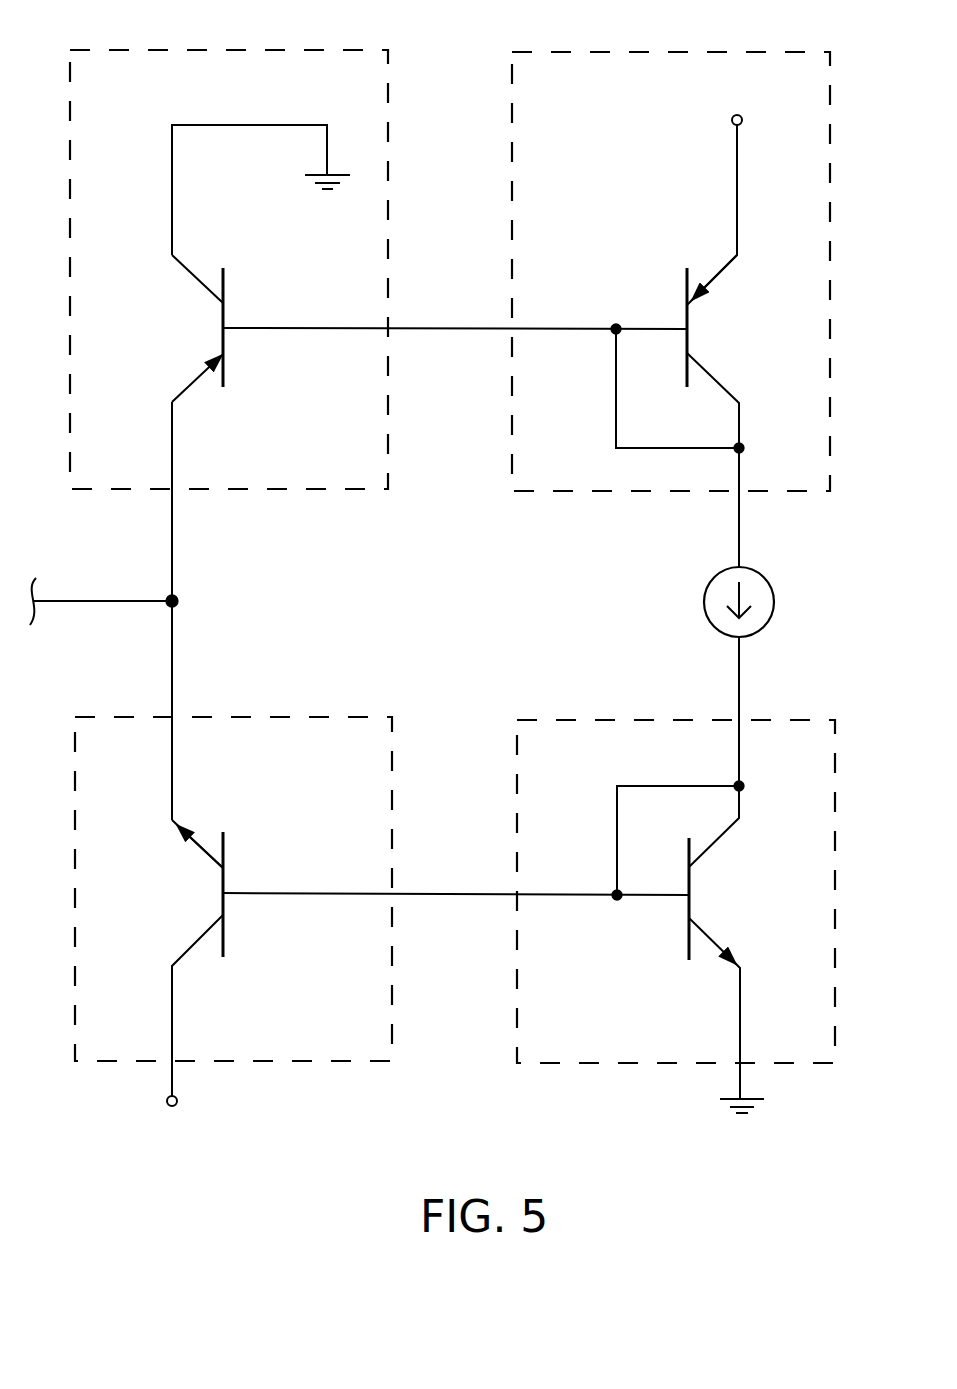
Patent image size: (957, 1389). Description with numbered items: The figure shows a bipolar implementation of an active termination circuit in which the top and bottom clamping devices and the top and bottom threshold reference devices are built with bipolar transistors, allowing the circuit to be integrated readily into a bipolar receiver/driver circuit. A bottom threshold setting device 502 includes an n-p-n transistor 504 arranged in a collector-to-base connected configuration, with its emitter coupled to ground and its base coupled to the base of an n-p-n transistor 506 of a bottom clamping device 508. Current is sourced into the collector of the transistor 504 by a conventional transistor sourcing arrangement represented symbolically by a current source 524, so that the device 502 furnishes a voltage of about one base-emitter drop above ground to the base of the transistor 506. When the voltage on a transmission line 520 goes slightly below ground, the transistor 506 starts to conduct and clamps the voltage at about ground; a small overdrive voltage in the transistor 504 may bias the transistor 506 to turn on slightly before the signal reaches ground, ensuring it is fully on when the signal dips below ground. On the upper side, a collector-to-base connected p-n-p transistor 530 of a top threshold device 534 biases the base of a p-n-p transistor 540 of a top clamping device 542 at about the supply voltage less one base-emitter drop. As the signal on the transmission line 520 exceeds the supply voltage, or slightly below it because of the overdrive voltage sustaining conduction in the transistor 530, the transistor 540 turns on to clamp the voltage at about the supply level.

The bottom threshold setting device 502 is at (800, 1045).
The n-p-n transistor 504 is at (693, 893).
The n-p-n transistor 506 is at (223, 893).
The bottom clamping device 508 is at (115, 1040).
The transmission line 520 is at (122, 601).
The current source 524 is at (763, 596).
The p-n-p transistor 530 is at (690, 329).
The top threshold device 534 is at (610, 72).
The p-n-p transistor 540 is at (223, 328).
The top clamping device 542 is at (215, 70).